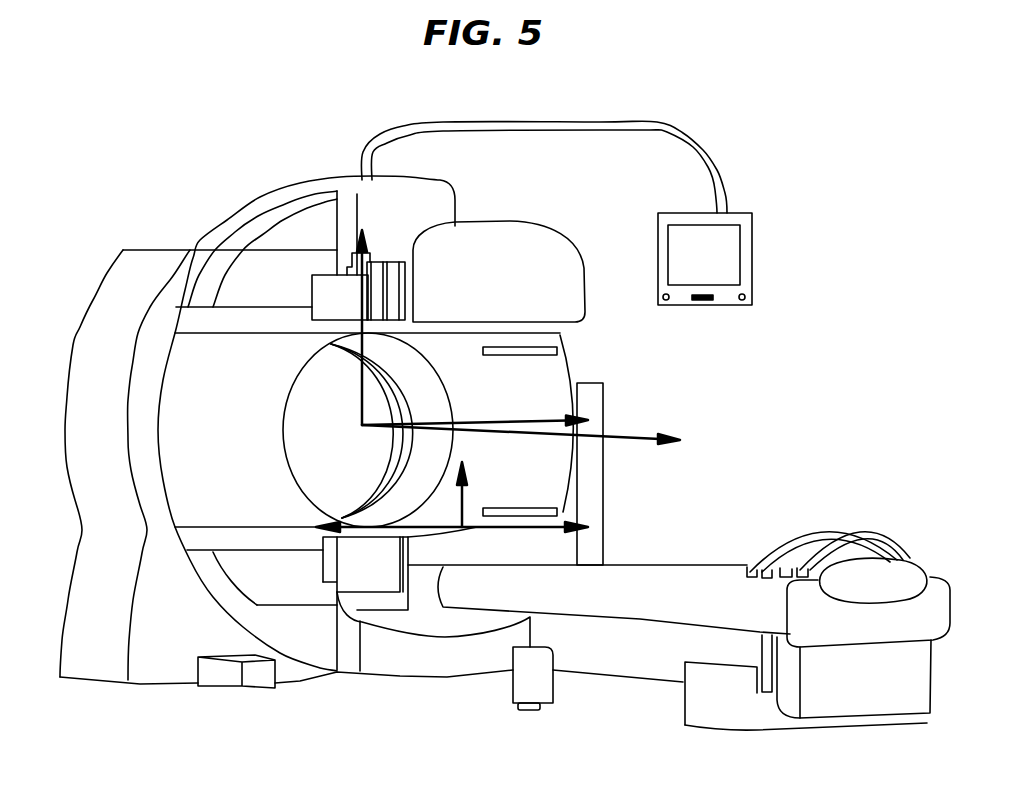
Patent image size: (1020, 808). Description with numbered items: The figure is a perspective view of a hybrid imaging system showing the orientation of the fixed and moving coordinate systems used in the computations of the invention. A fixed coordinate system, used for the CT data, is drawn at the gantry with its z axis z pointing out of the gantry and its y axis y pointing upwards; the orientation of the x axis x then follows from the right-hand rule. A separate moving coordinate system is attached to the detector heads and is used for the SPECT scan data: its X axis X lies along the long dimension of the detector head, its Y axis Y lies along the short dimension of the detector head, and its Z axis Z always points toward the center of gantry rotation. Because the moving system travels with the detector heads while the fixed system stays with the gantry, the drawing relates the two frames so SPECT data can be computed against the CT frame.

The x axis x is at (475, 408).
The y axis y is at (342, 324).
The Z axis Z is at (536, 439).
The X axis X is at (345, 552).
The Y axis Y is at (453, 509).
The z axis z is at (478, 494).